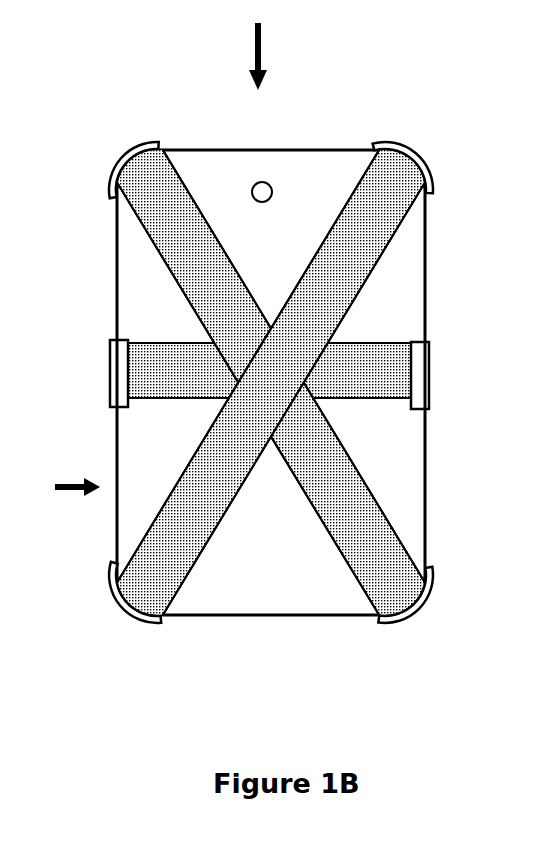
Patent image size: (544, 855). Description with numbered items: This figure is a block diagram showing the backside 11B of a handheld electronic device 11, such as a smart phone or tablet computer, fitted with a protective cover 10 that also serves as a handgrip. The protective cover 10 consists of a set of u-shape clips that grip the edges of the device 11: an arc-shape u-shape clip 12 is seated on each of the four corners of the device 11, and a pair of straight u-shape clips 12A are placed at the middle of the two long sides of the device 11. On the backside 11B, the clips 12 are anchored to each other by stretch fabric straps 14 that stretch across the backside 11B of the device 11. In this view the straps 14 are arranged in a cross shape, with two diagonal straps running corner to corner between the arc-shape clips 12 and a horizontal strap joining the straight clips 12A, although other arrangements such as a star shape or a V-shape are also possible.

The protective cover 10 is at (277, 55).
The device 11 is at (69, 474).
The backside 11B is at (321, 161).
The arc-shape u-shape clip 12 is at (102, 131).
The straight u-shape clip 12A is at (90, 360).
The stretch fabric straps 14 is at (324, 258).